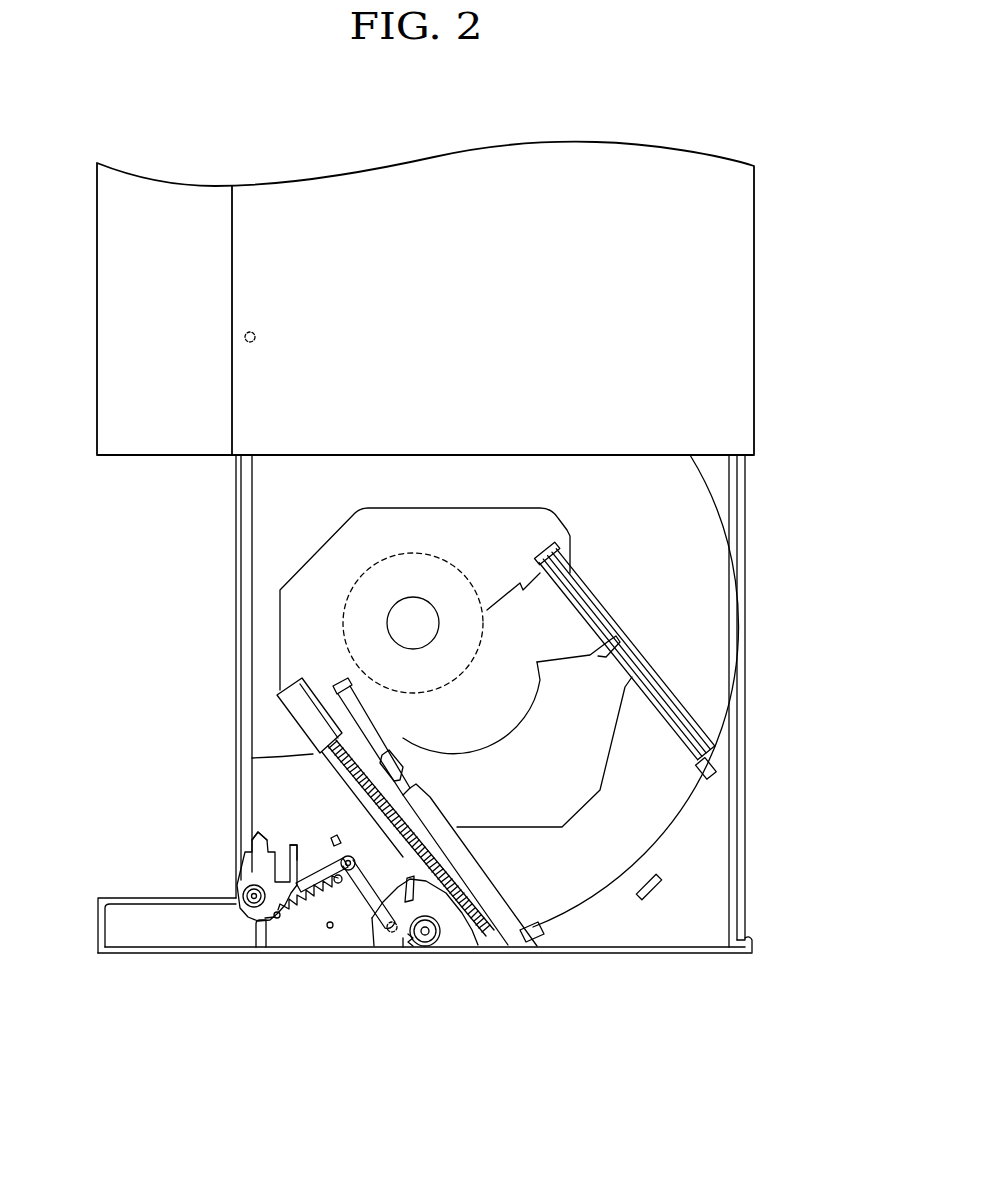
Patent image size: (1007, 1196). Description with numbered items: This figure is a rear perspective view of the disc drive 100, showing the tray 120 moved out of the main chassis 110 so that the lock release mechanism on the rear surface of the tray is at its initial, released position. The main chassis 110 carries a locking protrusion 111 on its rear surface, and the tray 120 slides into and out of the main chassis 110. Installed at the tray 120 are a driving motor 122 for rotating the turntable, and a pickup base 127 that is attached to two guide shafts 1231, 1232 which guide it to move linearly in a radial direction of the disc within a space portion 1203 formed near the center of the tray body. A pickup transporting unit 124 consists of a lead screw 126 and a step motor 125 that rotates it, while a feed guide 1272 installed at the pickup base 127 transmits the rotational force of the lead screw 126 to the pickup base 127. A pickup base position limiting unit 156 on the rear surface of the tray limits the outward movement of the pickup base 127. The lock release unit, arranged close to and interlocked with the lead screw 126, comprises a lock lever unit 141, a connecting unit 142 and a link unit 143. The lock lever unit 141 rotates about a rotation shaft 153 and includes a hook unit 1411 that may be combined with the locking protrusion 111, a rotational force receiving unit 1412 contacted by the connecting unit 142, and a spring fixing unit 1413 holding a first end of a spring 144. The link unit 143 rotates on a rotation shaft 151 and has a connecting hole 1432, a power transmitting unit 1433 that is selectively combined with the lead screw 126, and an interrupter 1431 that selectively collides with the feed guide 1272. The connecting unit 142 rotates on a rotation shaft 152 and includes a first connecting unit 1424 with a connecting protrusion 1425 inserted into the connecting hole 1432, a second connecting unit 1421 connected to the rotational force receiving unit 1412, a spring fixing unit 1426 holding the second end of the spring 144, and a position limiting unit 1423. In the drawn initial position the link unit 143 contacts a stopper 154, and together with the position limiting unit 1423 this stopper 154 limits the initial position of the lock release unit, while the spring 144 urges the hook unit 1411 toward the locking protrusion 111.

The disc drive 100 is at (274, 123).
The main chassis 110 is at (756, 327).
The locking protrusion 111 is at (245, 337).
The tray 120 is at (234, 563).
The space portion 1203 is at (505, 721).
The driving motor 122 is at (473, 635).
The pickup transporting unit 124 is at (178, 684).
The step motor 125 is at (285, 699).
The lead screw 126 is at (322, 745).
The guide shaft 1231 is at (670, 723).
The guide shaft 1232 is at (480, 868).
The pickup base 127 is at (582, 797).
The feed guide 1272 is at (400, 750).
The lock lever unit 141 is at (236, 919).
The hook unit 1411 is at (254, 846).
The rotational force receiving unit 1412 is at (270, 935).
The spring fixing unit 1413 is at (280, 920).
The second connecting unit 1421 is at (288, 850).
The connecting unit 142 is at (328, 850).
The position limiting unit 1423 is at (339, 847).
The first connecting unit 1424 is at (373, 905).
The connecting protrusion 1425 is at (390, 917).
The spring fixing unit 1426 is at (331, 928).
The link unit 143 is at (470, 945).
The interrupter 1431 is at (507, 940).
The connecting hole 1432 is at (403, 948).
The power transmitting unit 1433 is at (416, 890).
The spring 144 is at (300, 905).
The rotation shaft 151 is at (437, 947).
The rotation shaft 152 is at (352, 856).
The rotation shaft 153 is at (250, 890).
The stopper 154 is at (410, 948).
The pickup base position limiting unit 156 is at (652, 898).